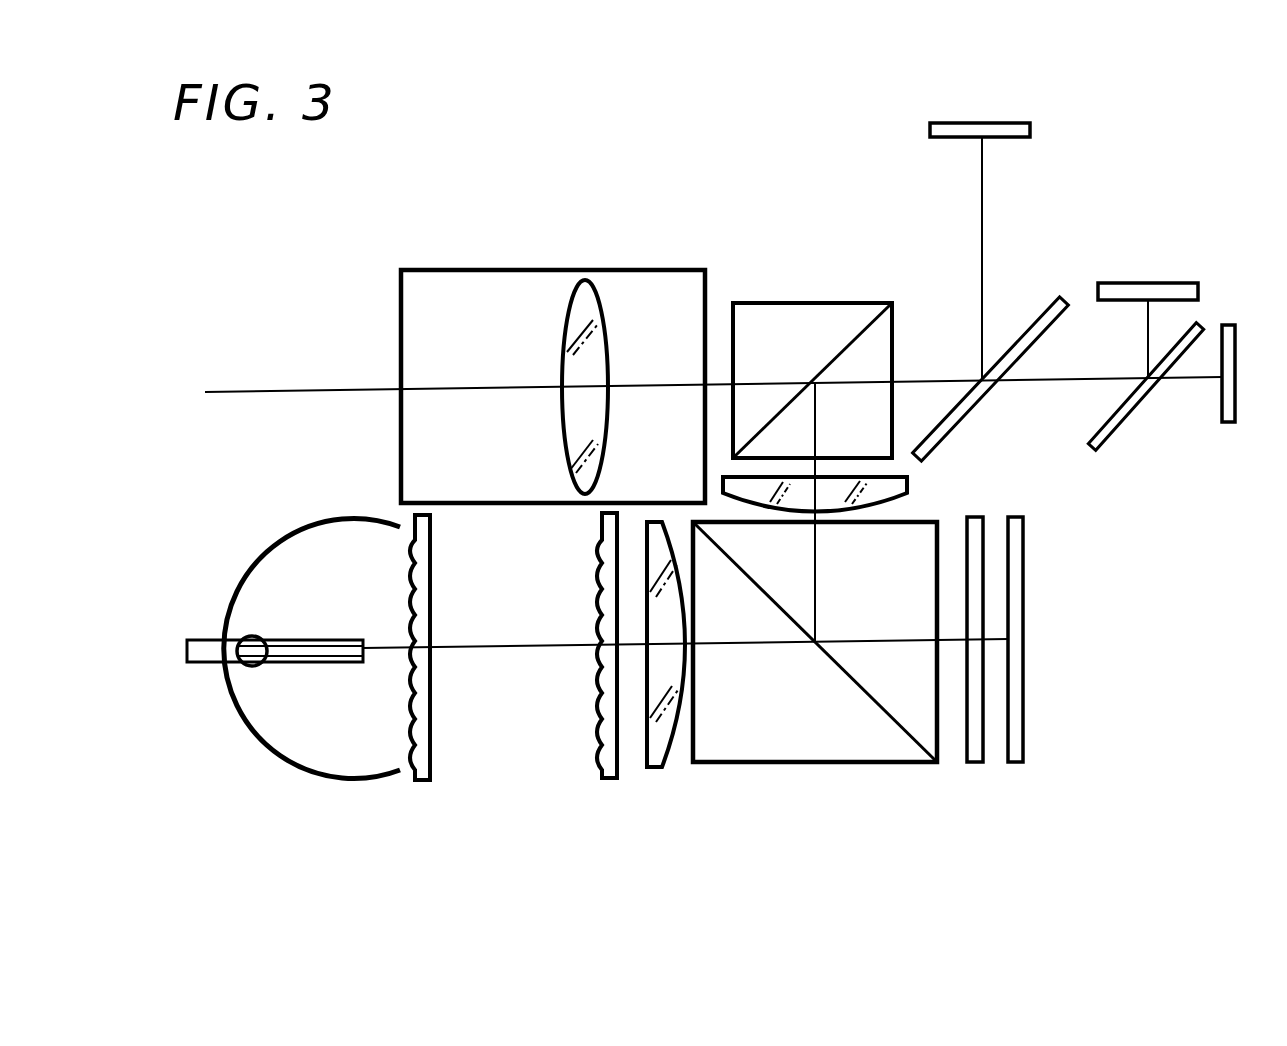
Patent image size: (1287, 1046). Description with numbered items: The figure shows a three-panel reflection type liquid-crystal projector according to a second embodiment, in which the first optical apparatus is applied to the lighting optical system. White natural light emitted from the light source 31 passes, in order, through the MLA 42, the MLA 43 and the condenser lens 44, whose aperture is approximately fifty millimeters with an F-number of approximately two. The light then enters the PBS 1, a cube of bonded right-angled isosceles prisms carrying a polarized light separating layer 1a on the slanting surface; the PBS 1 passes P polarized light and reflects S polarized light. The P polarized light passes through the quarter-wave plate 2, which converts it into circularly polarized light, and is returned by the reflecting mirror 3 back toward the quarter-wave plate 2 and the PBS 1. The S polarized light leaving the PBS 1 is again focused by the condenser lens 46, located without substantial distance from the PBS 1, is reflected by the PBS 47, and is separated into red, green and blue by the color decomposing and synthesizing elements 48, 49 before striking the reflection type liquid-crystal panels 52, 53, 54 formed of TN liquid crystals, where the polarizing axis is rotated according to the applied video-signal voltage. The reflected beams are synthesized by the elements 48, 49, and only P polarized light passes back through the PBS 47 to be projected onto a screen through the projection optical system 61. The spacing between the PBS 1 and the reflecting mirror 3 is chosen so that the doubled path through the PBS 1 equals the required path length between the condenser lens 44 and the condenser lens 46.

The PBS (polarizing beam splitter) 1 is at (818, 675).
The polarized light separating layer 1a is at (733, 562).
The quarter-wave plate 2 is at (983, 720).
The reflecting mirror 3 is at (1025, 592).
The light source 31 is at (282, 750).
The MLA (multi-lens array) 42 is at (432, 768).
The MLA (multi-lens array) 43 is at (608, 780).
The condenser lens 44 is at (652, 768).
The condenser lens 46 is at (907, 487).
The PBS 47 is at (778, 303).
The color decomposing and synthesizing element 48 is at (1052, 298).
The color decomposing and synthesizing element 49 is at (1125, 420).
The reflection type liquid-crystal panel 52 is at (1032, 130).
The reflection type liquid-crystal panel 53 is at (1135, 283).
The reflection type liquid-crystal panel 54 is at (1228, 425).
The projection optical system 61 is at (468, 270).